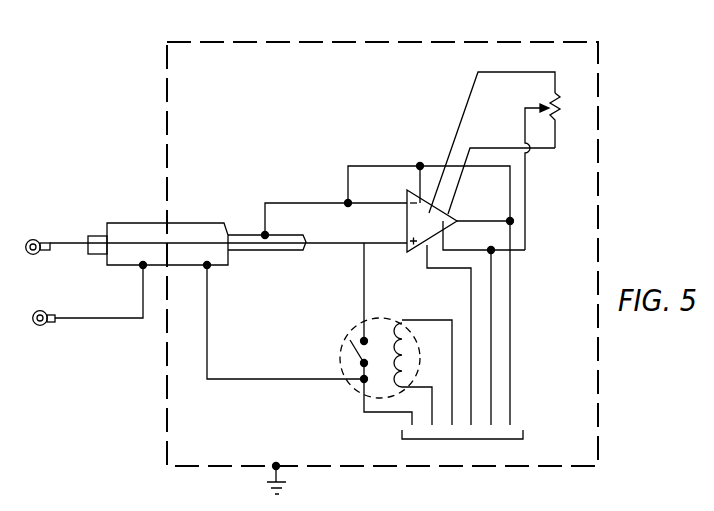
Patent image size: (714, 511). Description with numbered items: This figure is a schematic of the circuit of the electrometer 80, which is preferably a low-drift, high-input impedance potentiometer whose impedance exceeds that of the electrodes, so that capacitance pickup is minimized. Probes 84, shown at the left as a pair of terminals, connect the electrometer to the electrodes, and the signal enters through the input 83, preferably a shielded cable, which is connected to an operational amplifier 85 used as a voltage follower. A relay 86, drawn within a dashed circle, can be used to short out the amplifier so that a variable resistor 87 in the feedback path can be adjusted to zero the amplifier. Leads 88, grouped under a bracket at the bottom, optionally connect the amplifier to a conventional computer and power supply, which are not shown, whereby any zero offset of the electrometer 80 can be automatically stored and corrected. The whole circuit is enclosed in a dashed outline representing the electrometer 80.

The electrometer 80 is at (604, 205).
The input 83 is at (192, 233).
The probes 84 is at (45, 253).
The operational amplifier 85 is at (432, 227).
The relay 86 is at (342, 342).
The variable resistor 87 is at (559, 123).
The leads 88 is at (463, 439).